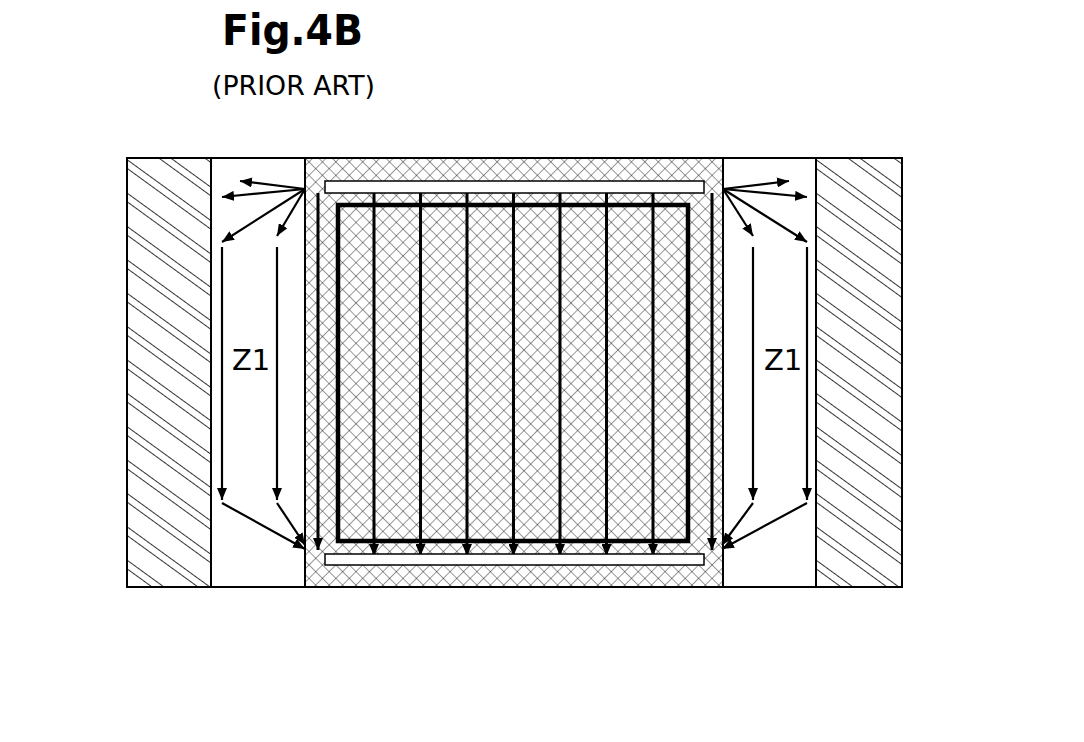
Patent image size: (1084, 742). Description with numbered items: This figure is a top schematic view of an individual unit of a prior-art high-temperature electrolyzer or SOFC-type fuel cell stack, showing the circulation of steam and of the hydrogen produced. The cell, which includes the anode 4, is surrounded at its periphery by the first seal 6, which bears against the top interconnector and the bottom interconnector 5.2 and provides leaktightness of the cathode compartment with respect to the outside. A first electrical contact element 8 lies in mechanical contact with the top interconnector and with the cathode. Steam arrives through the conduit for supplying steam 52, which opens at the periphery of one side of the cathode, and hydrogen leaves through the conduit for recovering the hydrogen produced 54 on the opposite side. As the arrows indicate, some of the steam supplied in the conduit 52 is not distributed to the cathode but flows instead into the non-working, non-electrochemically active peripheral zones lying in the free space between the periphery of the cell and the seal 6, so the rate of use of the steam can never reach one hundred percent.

The anode 4 is at (692, 444).
The first seal 6 is at (176, 362).
The first electrical contact element 8 is at (669, 174).
The conduit for supplying steam 52 is at (574, 187).
The conduit for recovering the hydrogen produced 54 is at (678, 562).
The bottom interconnector 5.2 is at (237, 210).